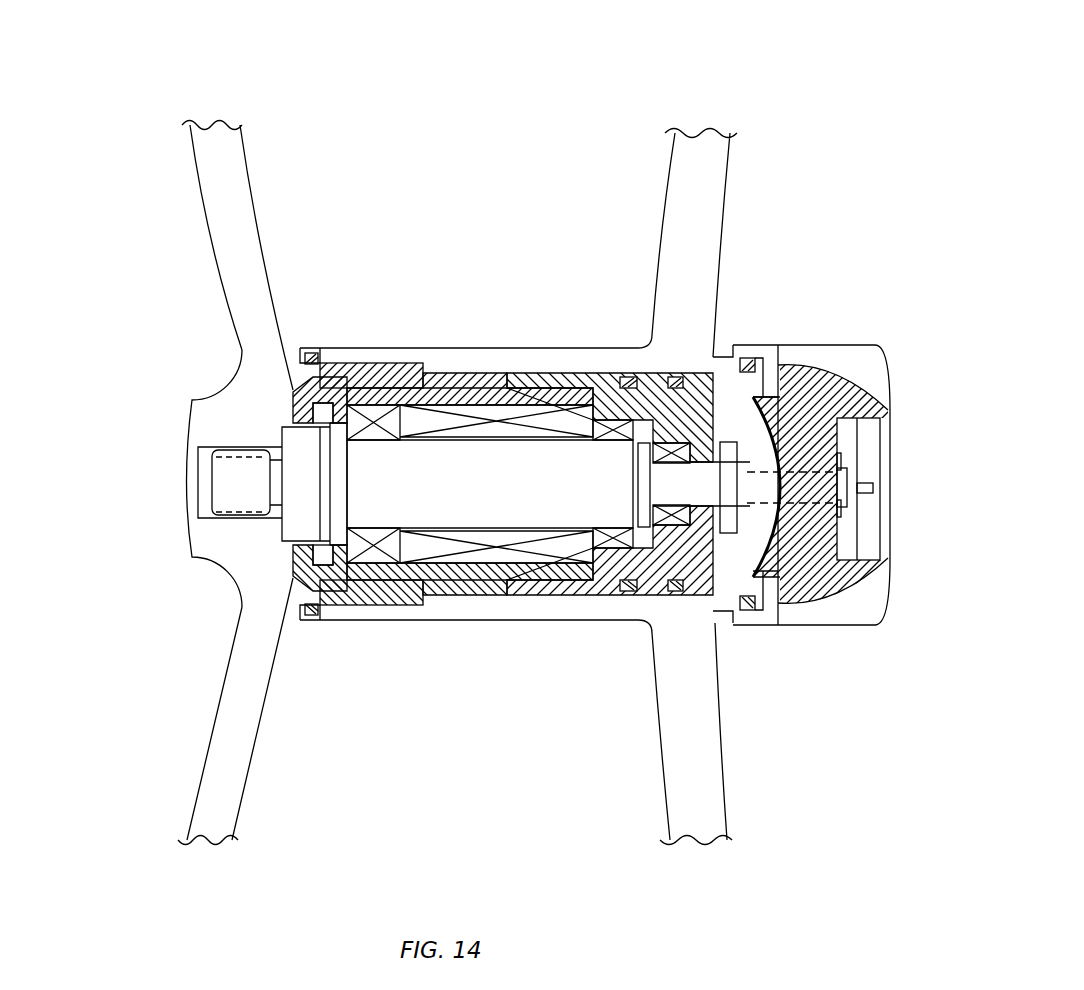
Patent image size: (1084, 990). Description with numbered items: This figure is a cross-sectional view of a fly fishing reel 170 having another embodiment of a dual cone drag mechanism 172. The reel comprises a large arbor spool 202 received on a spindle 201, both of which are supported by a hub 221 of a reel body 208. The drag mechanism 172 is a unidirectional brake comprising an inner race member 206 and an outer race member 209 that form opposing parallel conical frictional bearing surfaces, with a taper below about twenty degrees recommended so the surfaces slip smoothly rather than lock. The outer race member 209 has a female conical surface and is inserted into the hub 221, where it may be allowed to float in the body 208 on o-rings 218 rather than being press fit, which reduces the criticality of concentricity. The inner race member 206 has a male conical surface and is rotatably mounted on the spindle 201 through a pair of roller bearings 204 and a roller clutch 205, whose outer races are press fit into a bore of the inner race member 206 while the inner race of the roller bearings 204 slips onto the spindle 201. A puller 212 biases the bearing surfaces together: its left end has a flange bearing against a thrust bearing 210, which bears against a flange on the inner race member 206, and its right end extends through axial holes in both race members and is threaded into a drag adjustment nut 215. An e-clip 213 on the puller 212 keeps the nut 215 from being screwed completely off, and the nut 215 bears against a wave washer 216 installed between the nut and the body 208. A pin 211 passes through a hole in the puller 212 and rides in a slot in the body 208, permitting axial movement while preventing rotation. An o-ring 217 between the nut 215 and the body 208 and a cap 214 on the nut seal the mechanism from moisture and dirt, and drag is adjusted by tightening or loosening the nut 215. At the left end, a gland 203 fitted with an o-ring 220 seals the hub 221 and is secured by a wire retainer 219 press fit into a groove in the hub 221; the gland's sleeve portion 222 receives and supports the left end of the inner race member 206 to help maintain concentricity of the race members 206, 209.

The fly fishing reel 170 is at (392, 105).
The dual cone drag mechanism 172 is at (480, 222).
The spindle 201 is at (237, 490).
The large arbor spool 202 is at (202, 385).
The gland 203 is at (300, 392).
The roller bearings 204 is at (363, 386).
The roller clutch 205 is at (428, 410).
The inner race member 206 is at (520, 380).
The reel body 208 is at (703, 263).
The outer race member 209 is at (692, 350).
The thrust bearing 210 is at (661, 403).
The pin 211 is at (787, 440).
The puller 212 is at (810, 476).
The e-clip 213 is at (843, 517).
The cap 214 is at (893, 545).
The drag adjustment nut 215 is at (867, 620).
The wave washer 216 is at (814, 590).
The o-ring 217 is at (751, 612).
The o-rings 218 is at (667, 598).
The wire retainer 219 is at (309, 605).
The o-ring 220 is at (300, 566).
The hub 221 is at (467, 610).
The sleeve portion 222 is at (393, 592).